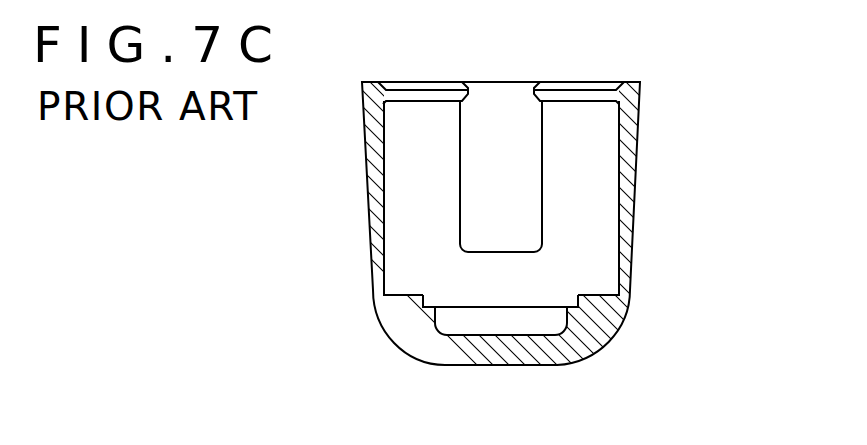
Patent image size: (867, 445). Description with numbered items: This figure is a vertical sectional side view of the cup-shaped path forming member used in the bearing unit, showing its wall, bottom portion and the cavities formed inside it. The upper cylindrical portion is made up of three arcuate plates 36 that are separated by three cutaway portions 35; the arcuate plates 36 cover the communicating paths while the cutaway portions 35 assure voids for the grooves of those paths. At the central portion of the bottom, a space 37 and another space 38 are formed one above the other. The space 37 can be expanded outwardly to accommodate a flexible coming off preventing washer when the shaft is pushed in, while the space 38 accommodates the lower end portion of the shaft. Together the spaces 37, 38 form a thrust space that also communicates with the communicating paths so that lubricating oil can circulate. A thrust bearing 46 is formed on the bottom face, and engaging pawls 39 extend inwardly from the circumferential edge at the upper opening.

The cutaway portion 35 is at (520, 197).
The arcuate plate 36 is at (595, 133).
The space 37 is at (558, 302).
The space 38 is at (550, 322).
The engaging pawl 39 is at (430, 95).
The thrust bearing 46 is at (522, 333).